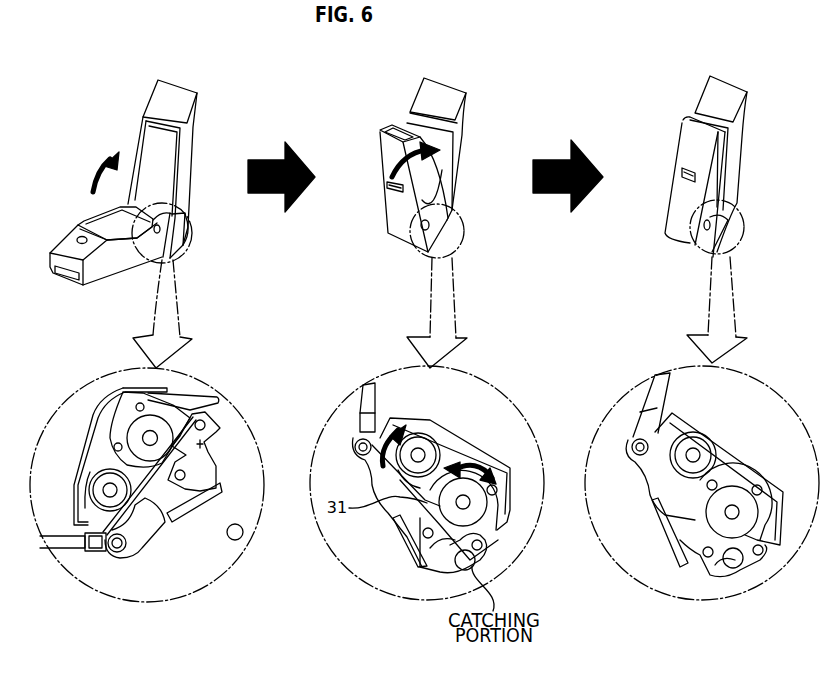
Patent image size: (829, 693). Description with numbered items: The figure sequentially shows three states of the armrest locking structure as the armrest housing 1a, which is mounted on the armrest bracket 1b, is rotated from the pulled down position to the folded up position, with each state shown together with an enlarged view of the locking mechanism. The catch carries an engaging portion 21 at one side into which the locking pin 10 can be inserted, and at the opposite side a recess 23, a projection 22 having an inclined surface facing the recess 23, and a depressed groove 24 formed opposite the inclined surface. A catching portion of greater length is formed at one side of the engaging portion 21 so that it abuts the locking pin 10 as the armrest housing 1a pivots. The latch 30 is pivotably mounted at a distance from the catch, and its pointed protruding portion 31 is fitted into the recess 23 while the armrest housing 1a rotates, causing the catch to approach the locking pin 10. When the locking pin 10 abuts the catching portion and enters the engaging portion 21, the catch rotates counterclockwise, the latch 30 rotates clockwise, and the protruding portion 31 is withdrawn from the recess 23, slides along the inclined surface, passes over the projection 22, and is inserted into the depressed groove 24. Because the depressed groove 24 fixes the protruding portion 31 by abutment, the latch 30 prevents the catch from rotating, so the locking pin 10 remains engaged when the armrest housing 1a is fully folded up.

The armrest housing 1a is at (95, 226).
The armrest bracket 1b is at (140, 138).
The locking pin 10 is at (238, 541).
The engaging portion 21 is at (207, 443).
The projection 22 is at (107, 474).
The recess 23 is at (420, 520).
The depressed groove 24 is at (122, 456).
The latch 30 is at (130, 516).
The protruding portion 31 is at (157, 476).